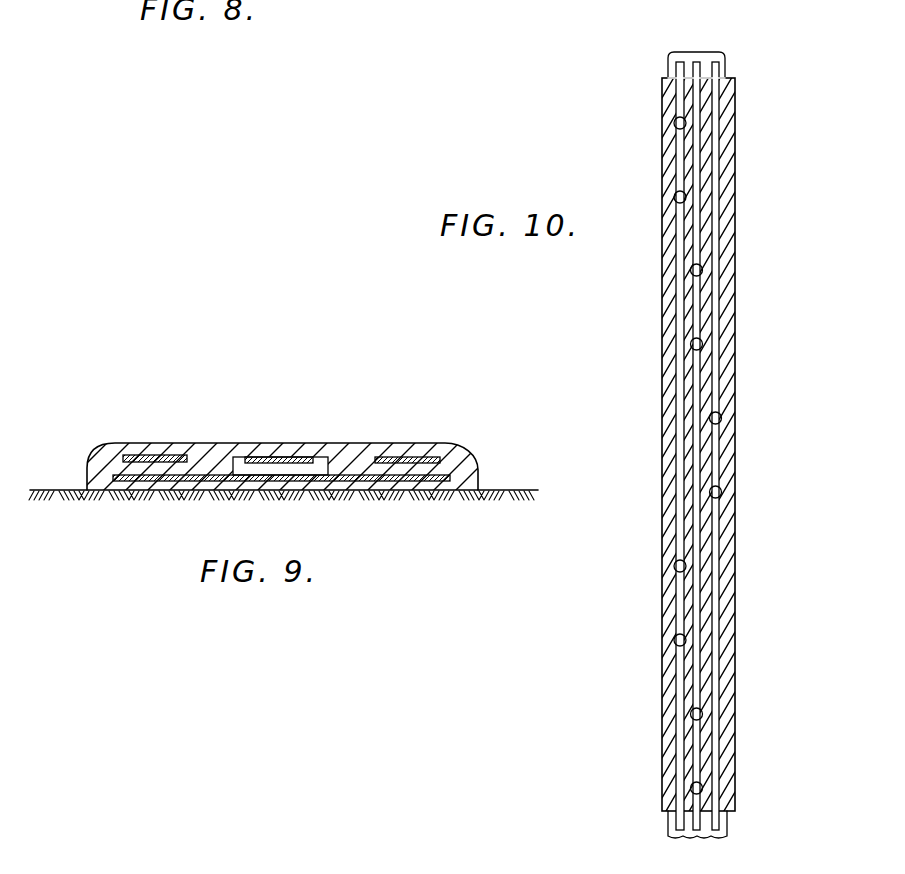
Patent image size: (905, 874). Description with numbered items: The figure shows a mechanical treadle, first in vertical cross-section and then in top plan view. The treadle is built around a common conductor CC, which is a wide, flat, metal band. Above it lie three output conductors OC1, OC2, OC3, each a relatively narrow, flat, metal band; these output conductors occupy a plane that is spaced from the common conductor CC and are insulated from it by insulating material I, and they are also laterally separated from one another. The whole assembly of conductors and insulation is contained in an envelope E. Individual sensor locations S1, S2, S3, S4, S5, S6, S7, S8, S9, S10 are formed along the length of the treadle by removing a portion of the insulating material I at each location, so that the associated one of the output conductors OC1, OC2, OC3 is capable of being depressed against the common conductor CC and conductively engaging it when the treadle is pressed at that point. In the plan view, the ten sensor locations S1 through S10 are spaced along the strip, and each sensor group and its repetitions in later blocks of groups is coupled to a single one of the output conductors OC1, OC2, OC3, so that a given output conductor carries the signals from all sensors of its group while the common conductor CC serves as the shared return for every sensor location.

In FIG. 9, the envelope E is at (87, 456).
In FIG. 9, the insulating material I is at (182, 443).
In FIG. 9, the output conductor OC1 is at (130, 455).
In FIG. 10, the output conductor OC1 is at (678, 63).
In FIG. 9, the output conductor OC2 is at (298, 457).
In FIG. 10, the output conductor OC2 is at (696, 55).
In FIG. 9, the output conductor OC3 is at (398, 457).
In FIG. 10, the output conductor OC3 is at (716, 60).
In FIG. 9, the common conductor CC is at (390, 481).
In FIG. 10, the common conductor CC is at (725, 60).
In FIG. 10, the sensing device S1 is at (645, 123).
In FIG. 10, the sensing device S2 is at (645, 197).
In FIG. 10, the sensing device S3 is at (645, 270).
In FIG. 10, the sensing device S4 is at (645, 344).
In FIG. 10, the sensing device S5 is at (645, 418).
In FIG. 10, the sensing device S6 is at (645, 492).
In FIG. 10, the sensing device S7 is at (645, 566).
In FIG. 10, the sensing device S8 is at (645, 640).
In FIG. 10, the sensing device S9 is at (645, 714).
In FIG. 10, the sensing device S10 is at (645, 788).